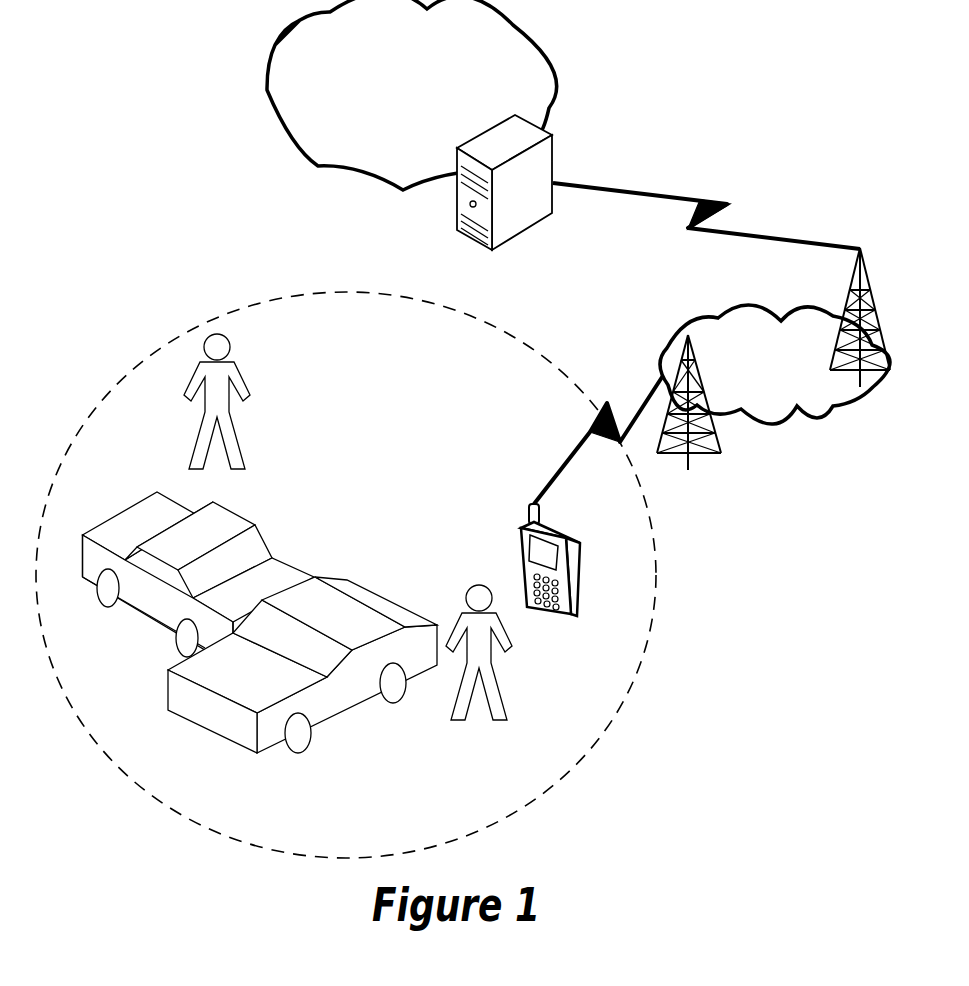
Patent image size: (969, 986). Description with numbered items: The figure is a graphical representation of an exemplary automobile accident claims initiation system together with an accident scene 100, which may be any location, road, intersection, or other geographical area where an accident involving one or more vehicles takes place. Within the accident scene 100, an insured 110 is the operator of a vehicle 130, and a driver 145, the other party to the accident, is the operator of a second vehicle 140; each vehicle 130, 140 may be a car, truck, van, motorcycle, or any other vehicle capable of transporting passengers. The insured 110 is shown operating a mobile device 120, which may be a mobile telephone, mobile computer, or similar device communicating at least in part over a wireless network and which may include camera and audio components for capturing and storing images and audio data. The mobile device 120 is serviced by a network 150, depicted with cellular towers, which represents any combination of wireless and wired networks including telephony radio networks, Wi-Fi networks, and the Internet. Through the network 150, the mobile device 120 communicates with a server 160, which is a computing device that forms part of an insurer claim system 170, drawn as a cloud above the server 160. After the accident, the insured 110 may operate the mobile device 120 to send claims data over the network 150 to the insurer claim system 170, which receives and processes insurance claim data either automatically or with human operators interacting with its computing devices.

The accident scene 100 is at (127, 375).
The insured 110 is at (500, 687).
The mobile device 120 is at (518, 555).
The vehicle 130 is at (323, 720).
The vehicle 140 is at (107, 520).
The driver 145 is at (243, 440).
The network 150 is at (756, 389).
The server 160 is at (493, 248).
The insurer claim system 170 is at (394, 118).